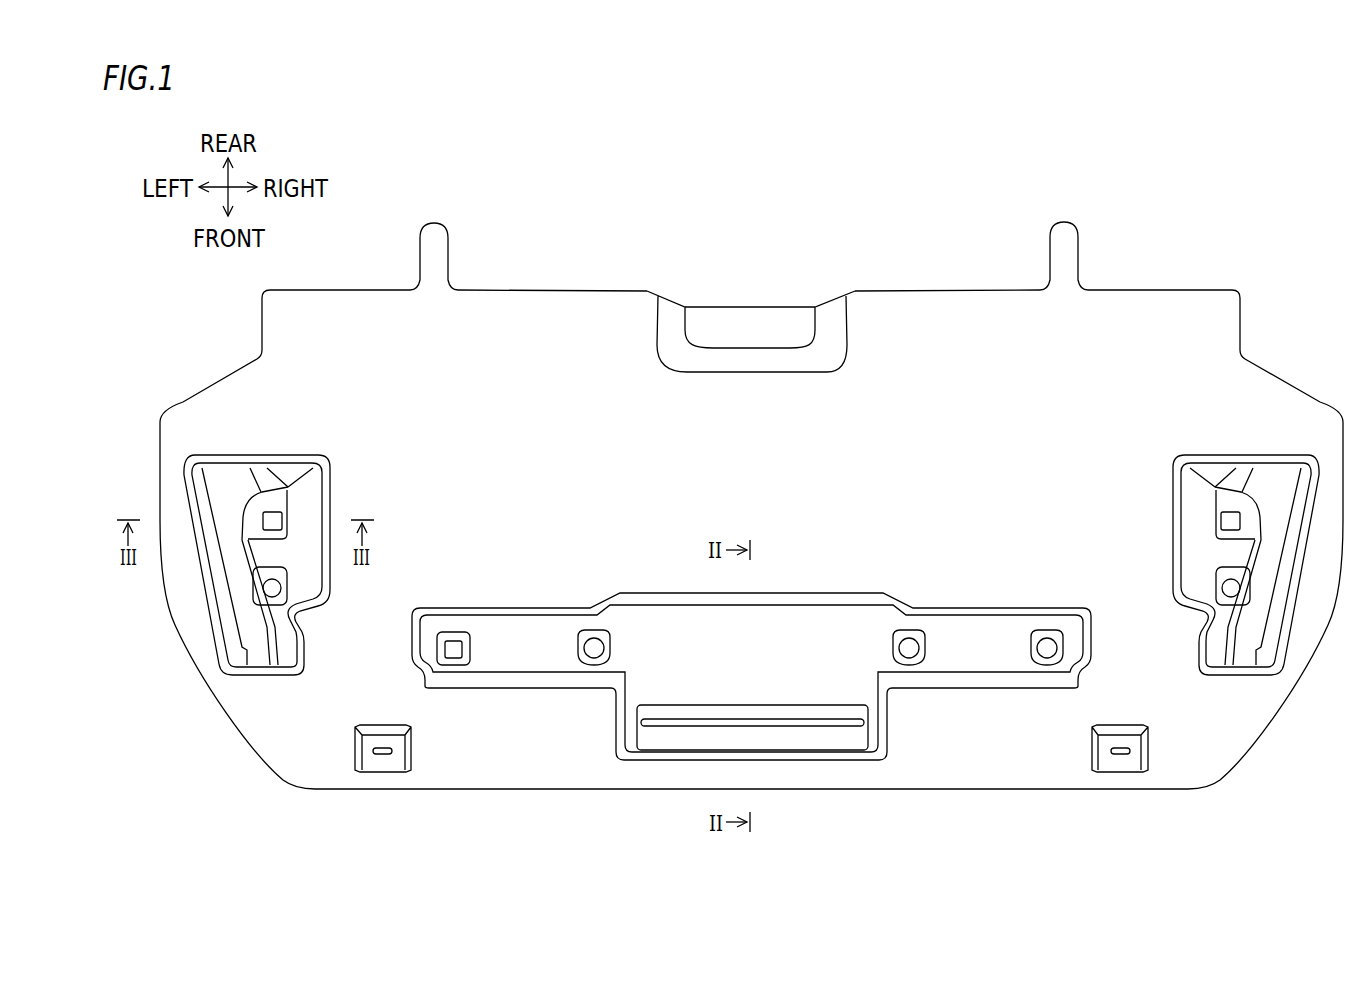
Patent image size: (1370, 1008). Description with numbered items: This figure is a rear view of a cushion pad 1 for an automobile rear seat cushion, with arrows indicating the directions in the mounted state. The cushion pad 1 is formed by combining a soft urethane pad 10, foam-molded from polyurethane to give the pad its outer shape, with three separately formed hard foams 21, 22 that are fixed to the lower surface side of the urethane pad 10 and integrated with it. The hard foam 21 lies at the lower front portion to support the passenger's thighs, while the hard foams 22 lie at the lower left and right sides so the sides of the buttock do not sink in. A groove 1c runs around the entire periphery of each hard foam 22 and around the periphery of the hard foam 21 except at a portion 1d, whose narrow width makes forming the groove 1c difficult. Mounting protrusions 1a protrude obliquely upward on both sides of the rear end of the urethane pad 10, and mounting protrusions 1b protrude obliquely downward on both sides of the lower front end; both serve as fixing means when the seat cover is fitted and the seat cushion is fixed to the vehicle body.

The cushion pad 1 is at (1196, 211).
The mounting protrusion 1a is at (433, 242).
The mounting protrusion 1b is at (387, 762).
The groove 1c is at (212, 640).
The portion 1d is at (620, 590).
The urethane pad 10 is at (848, 291).
The hard foam 21 is at (670, 740).
The hard foam 22 is at (227, 482).